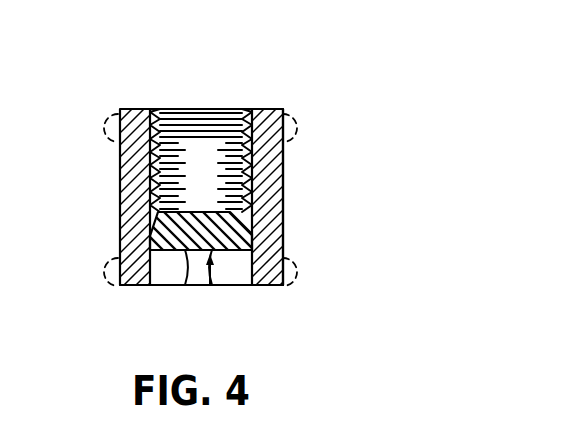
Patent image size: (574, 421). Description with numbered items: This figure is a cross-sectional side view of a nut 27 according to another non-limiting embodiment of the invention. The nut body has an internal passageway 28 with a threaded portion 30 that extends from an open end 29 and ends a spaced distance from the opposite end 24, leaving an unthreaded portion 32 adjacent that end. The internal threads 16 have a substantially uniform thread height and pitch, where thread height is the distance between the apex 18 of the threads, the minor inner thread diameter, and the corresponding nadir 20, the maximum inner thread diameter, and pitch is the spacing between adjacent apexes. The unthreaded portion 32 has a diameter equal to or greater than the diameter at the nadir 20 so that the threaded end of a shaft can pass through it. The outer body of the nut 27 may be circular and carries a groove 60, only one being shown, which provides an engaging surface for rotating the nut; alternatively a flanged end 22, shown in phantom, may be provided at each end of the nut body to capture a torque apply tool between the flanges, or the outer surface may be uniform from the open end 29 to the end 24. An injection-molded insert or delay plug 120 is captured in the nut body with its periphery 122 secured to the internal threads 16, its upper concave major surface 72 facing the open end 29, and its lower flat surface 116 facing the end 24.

The nut 27 is at (93, 98).
The open end 29 is at (121, 108).
The threaded portion 30 is at (160, 112).
The internal threads 16 is at (197, 140).
The internal passageway 28 is at (236, 108).
The periphery 122 is at (283, 109).
The flanged end 22 is at (102, 130).
The groove 60 is at (272, 214).
The apex 18 is at (158, 170).
The nadir 20 is at (155, 210).
The upper concave major surface 72 is at (202, 210).
The end 24 is at (127, 286).
The unthreaded portion 32 is at (152, 285).
The lower flat surface 116 is at (185, 284).
The insert or delay plug 120 is at (211, 286).